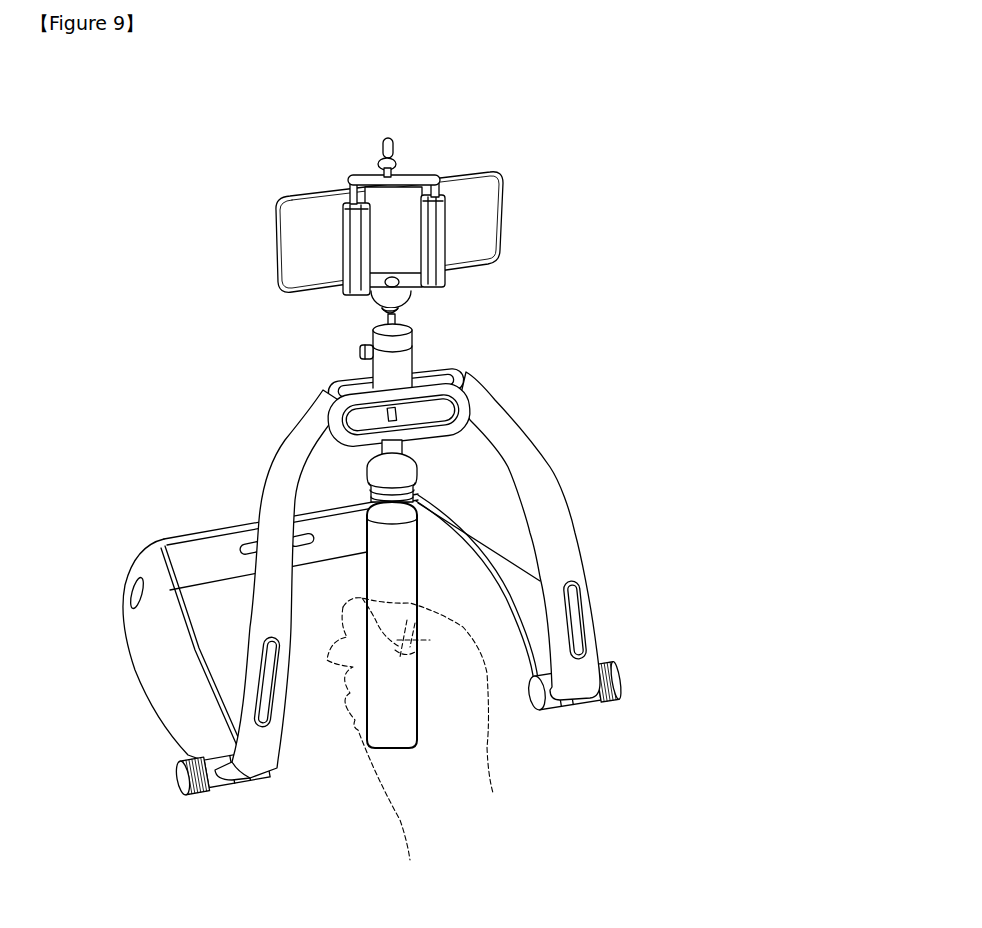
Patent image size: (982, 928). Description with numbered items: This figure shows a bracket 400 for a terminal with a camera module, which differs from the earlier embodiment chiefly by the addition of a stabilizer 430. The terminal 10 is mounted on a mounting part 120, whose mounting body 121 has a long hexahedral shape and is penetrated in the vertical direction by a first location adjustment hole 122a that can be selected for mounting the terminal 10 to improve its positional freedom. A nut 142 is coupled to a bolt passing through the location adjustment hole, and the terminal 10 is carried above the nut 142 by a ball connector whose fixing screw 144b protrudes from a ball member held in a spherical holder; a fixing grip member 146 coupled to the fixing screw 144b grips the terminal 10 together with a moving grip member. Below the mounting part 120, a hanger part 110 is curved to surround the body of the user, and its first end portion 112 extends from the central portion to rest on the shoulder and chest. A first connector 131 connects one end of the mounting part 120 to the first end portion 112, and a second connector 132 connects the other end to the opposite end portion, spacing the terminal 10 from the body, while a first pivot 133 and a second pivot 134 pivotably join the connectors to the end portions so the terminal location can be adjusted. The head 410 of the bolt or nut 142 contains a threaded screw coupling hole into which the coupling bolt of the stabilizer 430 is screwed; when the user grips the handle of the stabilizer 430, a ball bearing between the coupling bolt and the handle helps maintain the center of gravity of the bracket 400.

The bracket for a terminal with a camera module 400 is at (348, 468).
The terminal 10 is at (308, 193).
The fixing grip member 146 is at (447, 231).
The fixing screw 144b is at (403, 313).
The nut 142 is at (382, 373).
The mounting body 121 is at (452, 371).
The mounting part 120 is at (302, 391).
The first location adjustment hole 122a is at (463, 397).
The head 410 is at (412, 463).
The first connector 131 is at (267, 483).
The second connector 132 is at (568, 503).
The stabilizer 430 is at (440, 558).
The hanger part 110 is at (118, 568).
The first end portion 112 is at (330, 560).
The first pivot 133 is at (205, 797).
The second pivot 134 is at (612, 704).